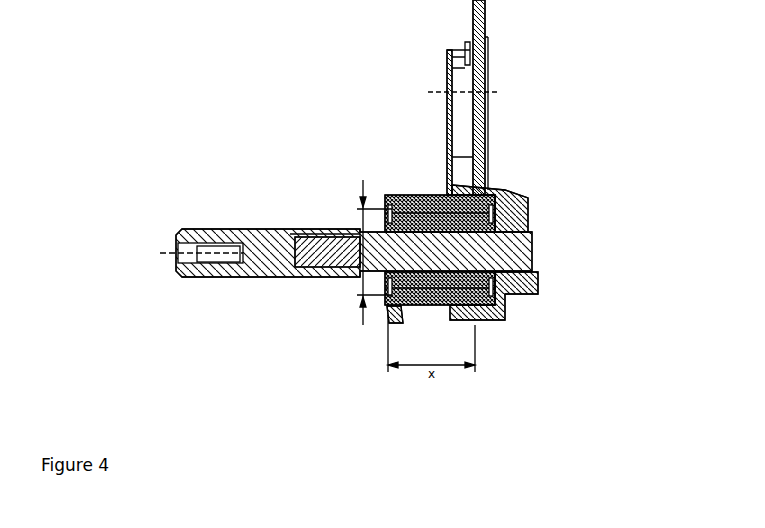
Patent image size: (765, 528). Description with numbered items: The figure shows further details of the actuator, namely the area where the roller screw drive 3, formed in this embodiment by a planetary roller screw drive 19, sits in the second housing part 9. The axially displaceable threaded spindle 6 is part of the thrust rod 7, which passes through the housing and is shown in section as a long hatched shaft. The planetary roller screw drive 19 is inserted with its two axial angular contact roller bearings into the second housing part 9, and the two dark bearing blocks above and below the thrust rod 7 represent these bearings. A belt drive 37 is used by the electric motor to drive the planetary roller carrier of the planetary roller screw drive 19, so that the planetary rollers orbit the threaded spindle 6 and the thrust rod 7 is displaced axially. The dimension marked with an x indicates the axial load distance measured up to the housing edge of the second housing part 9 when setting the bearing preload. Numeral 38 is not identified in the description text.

The roller screw drive 3 is at (388, 322).
The threaded spindle 6 is at (532, 243).
The thrust rod 7 is at (262, 228).
The second housing part 9 is at (520, 192).
The planetary roller screw drive 19 is at (344, 358).
The belt drive 37 is at (473, 158).
The bearing 38 is at (384, 210).